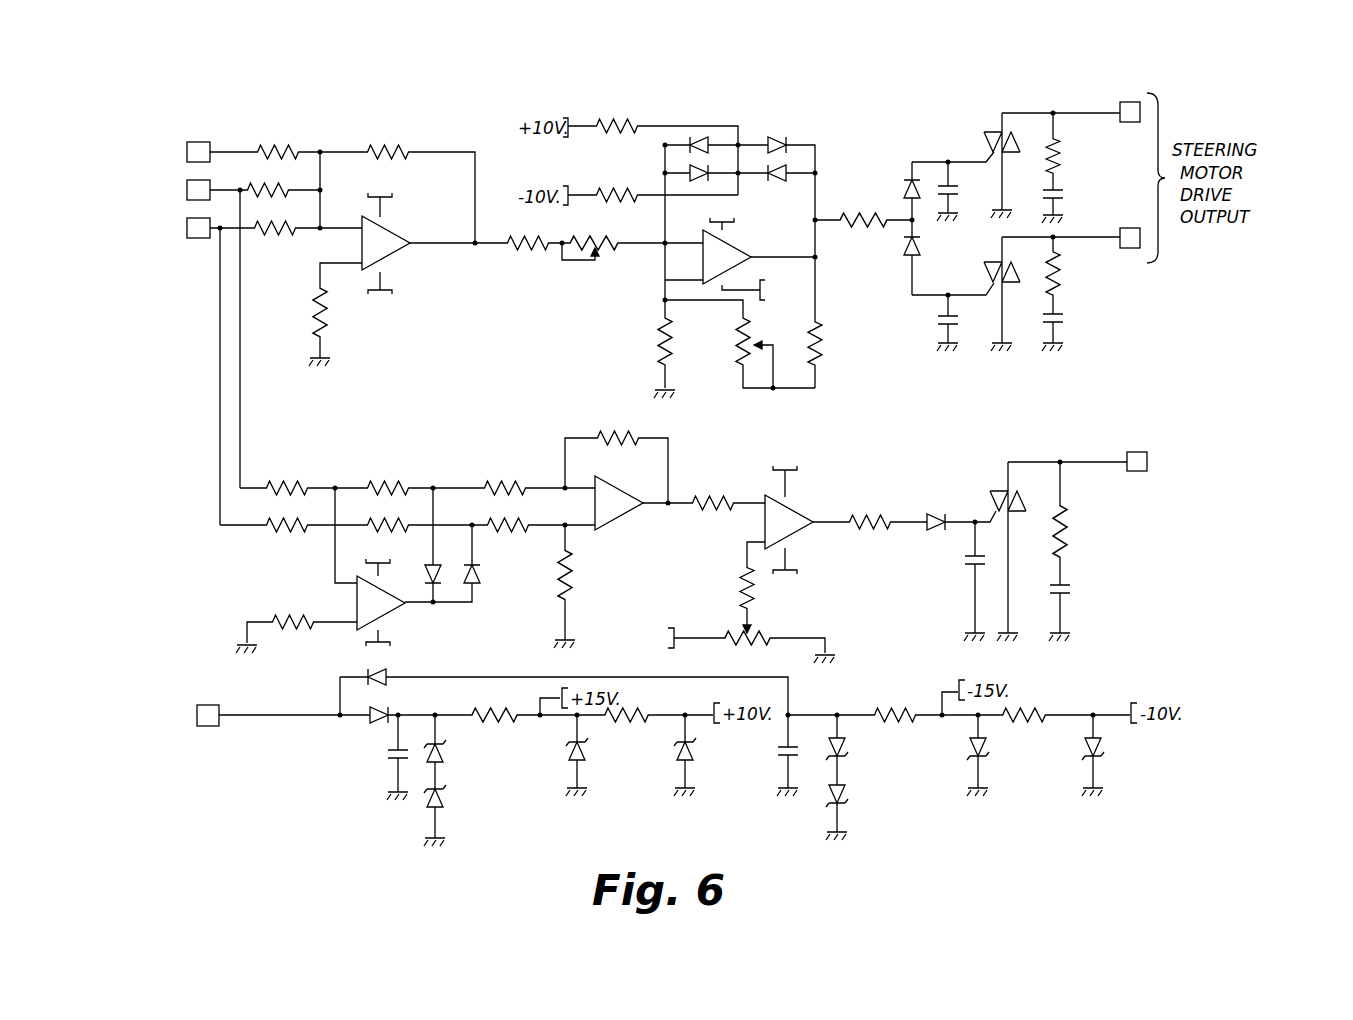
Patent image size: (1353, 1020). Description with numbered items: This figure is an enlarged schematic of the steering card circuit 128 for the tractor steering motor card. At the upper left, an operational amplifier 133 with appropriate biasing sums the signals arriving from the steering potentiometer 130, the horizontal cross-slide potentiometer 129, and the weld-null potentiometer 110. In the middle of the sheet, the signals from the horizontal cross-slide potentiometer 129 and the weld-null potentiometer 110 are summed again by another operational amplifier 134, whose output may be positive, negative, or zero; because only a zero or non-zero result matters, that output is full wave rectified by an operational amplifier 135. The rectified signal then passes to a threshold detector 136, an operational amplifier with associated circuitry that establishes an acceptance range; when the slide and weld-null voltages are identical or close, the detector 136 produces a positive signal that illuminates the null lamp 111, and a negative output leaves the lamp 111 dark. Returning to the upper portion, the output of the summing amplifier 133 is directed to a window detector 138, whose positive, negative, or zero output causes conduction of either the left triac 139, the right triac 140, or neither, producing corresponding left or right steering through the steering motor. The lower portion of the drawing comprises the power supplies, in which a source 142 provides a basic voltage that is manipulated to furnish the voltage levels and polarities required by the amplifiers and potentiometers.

The weld-null potentiometer 110 is at (187, 228).
The null lamp 111 is at (1148, 462).
The steering card circuit 128 is at (1070, 383).
The horizontal cross-slide potentiometer 129 is at (187, 190).
The steering potentiometer 130 is at (198, 140).
The operational amplifier 133 is at (387, 247).
The operational amplifier 134 is at (390, 607).
The operational amplifier 135 is at (618, 512).
The threshold detector 136 is at (793, 513).
The window detector 138 is at (735, 250).
The left triac 139 is at (990, 270).
The right triac 140 is at (993, 130).
The source 142 is at (206, 705).